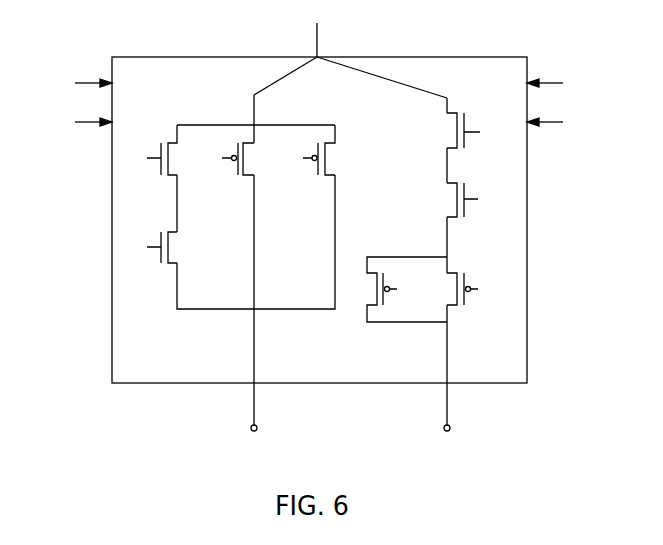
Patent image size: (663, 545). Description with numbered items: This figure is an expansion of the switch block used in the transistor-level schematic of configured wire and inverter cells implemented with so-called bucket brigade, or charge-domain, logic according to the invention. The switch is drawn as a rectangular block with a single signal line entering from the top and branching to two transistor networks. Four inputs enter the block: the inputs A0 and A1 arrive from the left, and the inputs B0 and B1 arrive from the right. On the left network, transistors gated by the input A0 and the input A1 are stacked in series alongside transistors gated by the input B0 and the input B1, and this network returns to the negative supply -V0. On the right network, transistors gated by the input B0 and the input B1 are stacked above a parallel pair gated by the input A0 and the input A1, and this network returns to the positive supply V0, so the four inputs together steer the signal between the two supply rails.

The A0 input A0 is at (248, 198).
The A1 input A1 is at (273, 209).
The B0 input B0 is at (399, 125).
The B1 input B1 is at (439, 165).
The supply voltage V0 is at (348, 268).